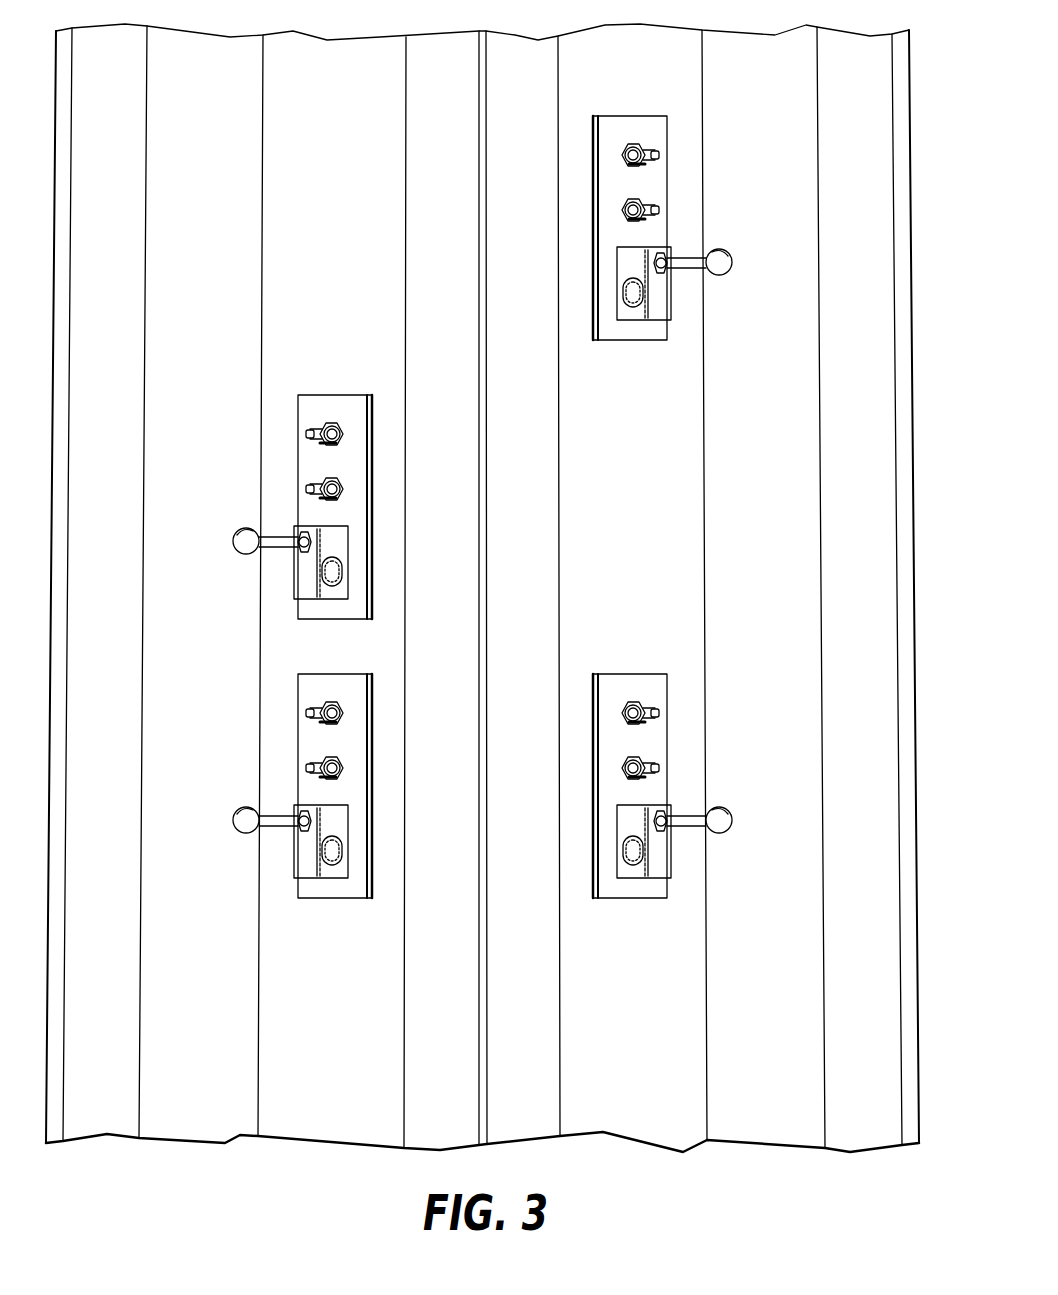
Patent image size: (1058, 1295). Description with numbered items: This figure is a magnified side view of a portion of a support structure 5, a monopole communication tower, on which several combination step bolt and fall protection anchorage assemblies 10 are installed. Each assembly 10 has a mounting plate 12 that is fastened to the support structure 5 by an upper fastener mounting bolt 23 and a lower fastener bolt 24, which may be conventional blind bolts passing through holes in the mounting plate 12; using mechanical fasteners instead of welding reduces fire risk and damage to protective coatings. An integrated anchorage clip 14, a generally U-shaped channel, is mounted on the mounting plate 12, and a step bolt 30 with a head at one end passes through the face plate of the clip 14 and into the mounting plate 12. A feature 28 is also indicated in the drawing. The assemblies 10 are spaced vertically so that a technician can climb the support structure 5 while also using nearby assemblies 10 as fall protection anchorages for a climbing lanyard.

The support structure 5 is at (878, 240).
The combination step bolt and fall protection anchorage assembly 10 is at (481, 510).
The mounting plate 12 is at (612, 187).
The integrated anchorage clip 14 is at (665, 305).
The upper fastener mounting bolt 23 is at (650, 146).
The lower fastener bolt 24 is at (650, 201).
The slot 28 is at (630, 292).
The step bolt 30 is at (687, 265).